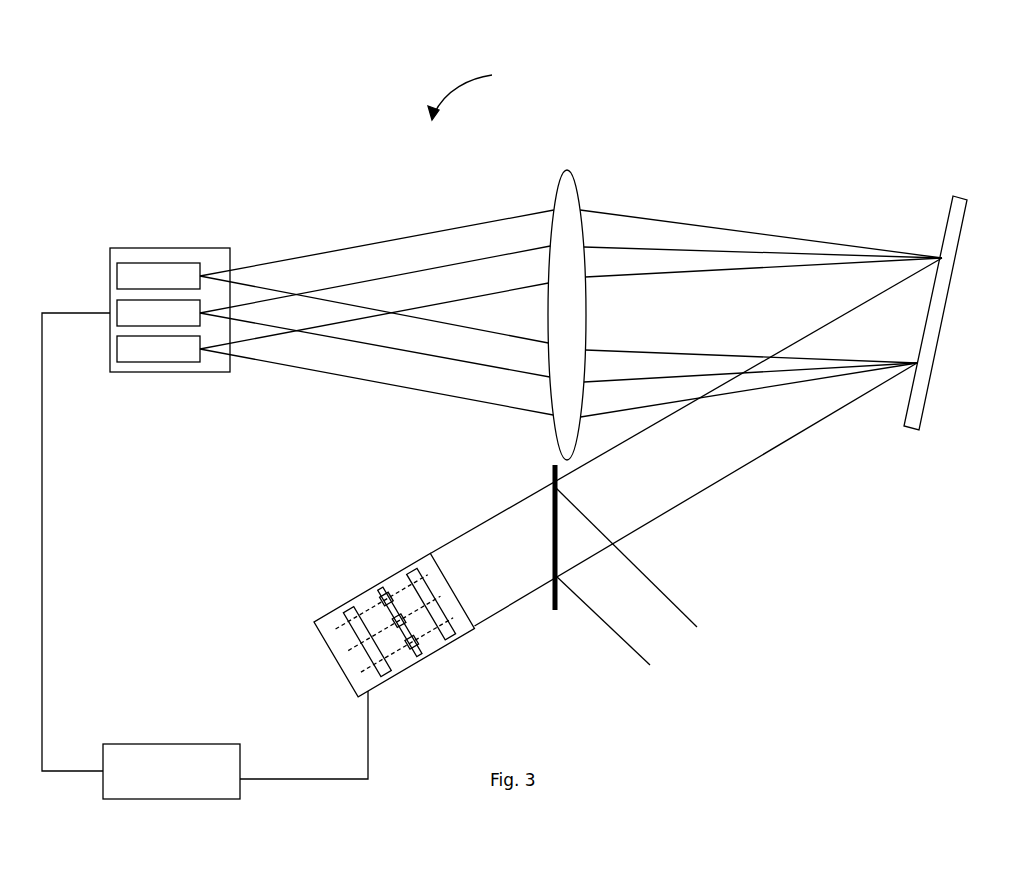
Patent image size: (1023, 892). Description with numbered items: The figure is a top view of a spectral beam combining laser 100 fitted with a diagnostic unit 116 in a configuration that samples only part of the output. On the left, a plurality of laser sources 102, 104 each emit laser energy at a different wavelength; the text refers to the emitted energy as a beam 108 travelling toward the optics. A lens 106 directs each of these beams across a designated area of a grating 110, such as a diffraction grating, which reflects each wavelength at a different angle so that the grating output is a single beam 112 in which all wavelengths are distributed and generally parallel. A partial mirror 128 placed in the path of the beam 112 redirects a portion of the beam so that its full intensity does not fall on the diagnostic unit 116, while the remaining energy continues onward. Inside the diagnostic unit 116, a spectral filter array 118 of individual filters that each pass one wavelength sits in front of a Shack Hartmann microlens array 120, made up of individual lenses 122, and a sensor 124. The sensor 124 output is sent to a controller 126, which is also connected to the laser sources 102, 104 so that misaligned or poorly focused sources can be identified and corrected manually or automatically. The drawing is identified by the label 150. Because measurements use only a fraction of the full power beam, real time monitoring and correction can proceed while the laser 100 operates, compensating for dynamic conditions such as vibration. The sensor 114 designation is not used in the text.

The spectral beam combining laser 100 is at (482, 92).
The laser source 102 is at (177, 263).
The laser source 104 is at (177, 363).
The lens 106 is at (558, 182).
The light beam 108 is at (760, 230).
The grating 110 is at (940, 333).
The beam 112 is at (813, 425).
The detector 114 is at (407, 580).
The diagnostic unit 116 is at (330, 611).
The spectral filter array 118 is at (432, 560).
The microlens array 120 is at (422, 652).
The individual lenses 122 is at (385, 588).
The sensor 124 is at (362, 648).
The controller 126 is at (137, 802).
The partial mirror 128 is at (553, 507).
The optical assembly 150 is at (636, 49).